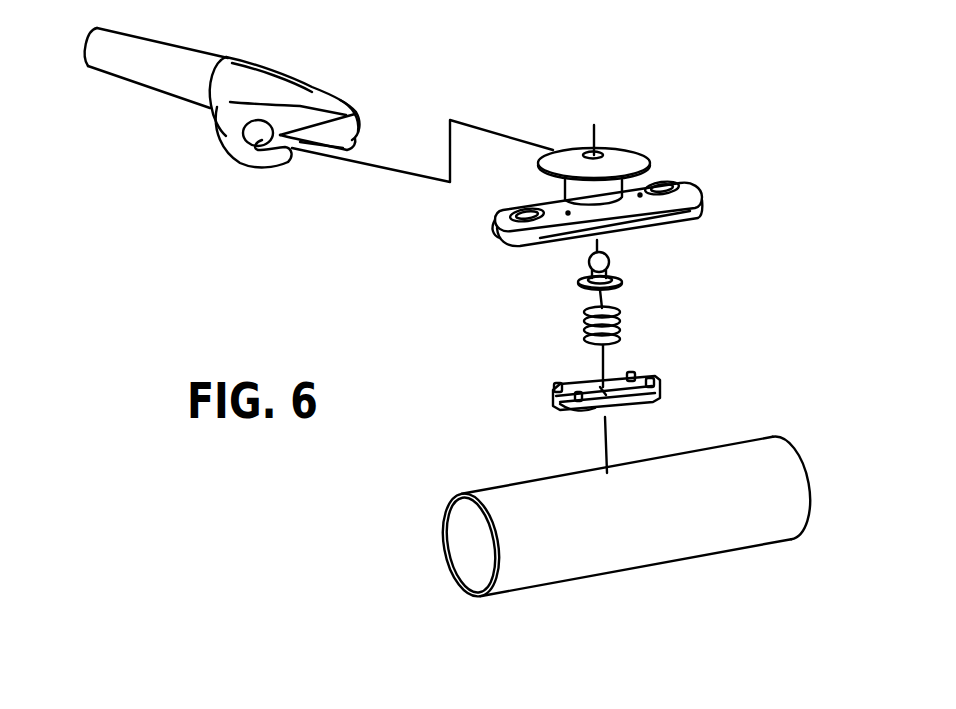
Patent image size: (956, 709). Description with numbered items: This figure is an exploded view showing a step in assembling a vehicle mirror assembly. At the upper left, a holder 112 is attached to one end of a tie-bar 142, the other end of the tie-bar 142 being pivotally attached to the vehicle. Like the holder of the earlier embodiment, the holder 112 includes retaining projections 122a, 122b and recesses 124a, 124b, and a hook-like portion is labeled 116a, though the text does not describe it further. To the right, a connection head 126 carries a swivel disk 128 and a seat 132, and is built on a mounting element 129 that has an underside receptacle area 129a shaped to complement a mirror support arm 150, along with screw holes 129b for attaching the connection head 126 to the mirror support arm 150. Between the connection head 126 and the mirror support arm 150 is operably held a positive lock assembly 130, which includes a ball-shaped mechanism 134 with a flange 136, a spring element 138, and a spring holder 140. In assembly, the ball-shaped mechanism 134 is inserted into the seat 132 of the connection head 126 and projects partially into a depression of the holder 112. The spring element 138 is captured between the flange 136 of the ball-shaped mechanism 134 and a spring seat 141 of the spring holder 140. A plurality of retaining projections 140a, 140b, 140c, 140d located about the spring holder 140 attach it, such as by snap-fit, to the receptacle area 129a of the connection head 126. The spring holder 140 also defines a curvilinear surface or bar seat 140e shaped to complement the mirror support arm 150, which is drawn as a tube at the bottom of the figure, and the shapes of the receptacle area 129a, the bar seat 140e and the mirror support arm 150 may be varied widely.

The holder 112 is at (310, 85).
The hook 116a is at (297, 152).
The retaining projection 122a is at (248, 168).
The retaining projection 122b is at (340, 153).
The recess 124a is at (253, 137).
The recess 124b is at (357, 133).
The connection head 126 is at (576, 120).
The swivel disk 128 is at (633, 160).
The mounting element 129 is at (698, 218).
The receptacle area 129a is at (502, 235).
The screw holes 129b is at (677, 187).
The positive lock assembly 130 is at (785, 150).
The seat 132 is at (609, 148).
The ball-shaped mechanism 134 is at (587, 262).
The flange 136 is at (622, 273).
The spring element 138 is at (620, 320).
The spring holder 140 is at (613, 407).
The retaining projection 140a is at (555, 390).
The retaining projection 140b is at (595, 407).
The retaining projection 140c is at (660, 386).
The retaining projection 140d is at (637, 377).
The bar seat 140e is at (573, 407).
The spring seat 141 is at (600, 387).
The tie-bar 142 is at (175, 85).
The mirror support arm 150 is at (495, 503).